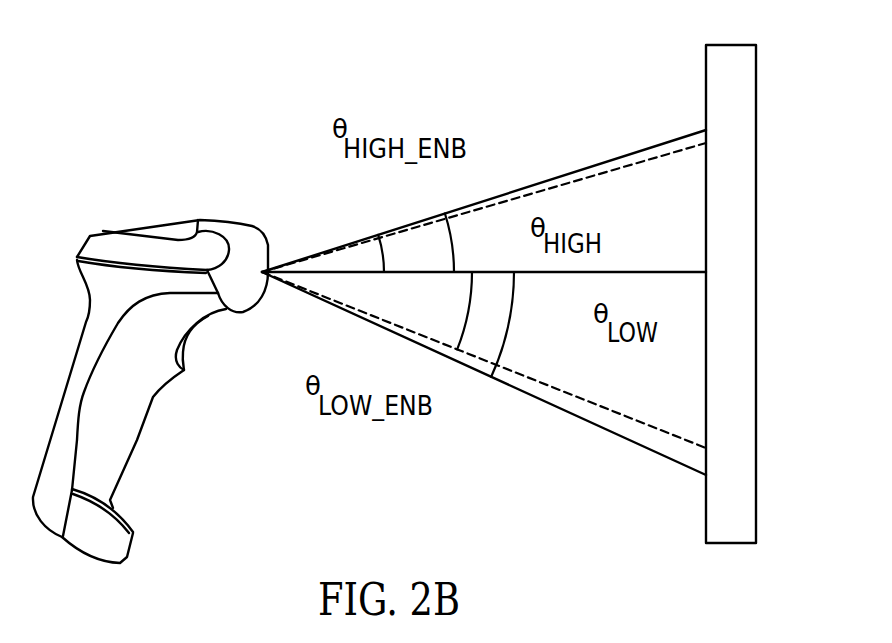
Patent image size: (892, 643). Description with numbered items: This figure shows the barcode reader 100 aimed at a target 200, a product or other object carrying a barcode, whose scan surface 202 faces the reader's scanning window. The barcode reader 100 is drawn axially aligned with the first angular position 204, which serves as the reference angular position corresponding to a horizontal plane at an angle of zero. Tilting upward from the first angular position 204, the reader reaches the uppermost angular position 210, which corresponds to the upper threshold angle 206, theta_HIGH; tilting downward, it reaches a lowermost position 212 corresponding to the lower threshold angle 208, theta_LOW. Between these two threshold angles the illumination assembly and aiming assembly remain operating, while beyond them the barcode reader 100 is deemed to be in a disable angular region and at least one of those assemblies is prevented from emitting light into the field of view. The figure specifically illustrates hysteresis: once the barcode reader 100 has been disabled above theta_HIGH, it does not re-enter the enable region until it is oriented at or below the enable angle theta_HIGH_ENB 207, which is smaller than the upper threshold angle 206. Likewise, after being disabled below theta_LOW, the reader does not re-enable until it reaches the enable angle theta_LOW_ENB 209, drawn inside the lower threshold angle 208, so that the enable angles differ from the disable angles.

The barcode reader 100 is at (166, 202).
The target 200 is at (735, 91).
The scan surface 202 is at (705, 187).
The first angular position 204 is at (657, 272).
The upper threshold angle 206 is at (457, 247).
The enable angle theta_HIGH_ENB 207 is at (383, 257).
The lower threshold angle 208 is at (509, 323).
The enable angle theta_LOW_ENB 209 is at (467, 310).
The uppermost angular position 210 is at (587, 166).
The lower field of view boundary 212 is at (573, 415).